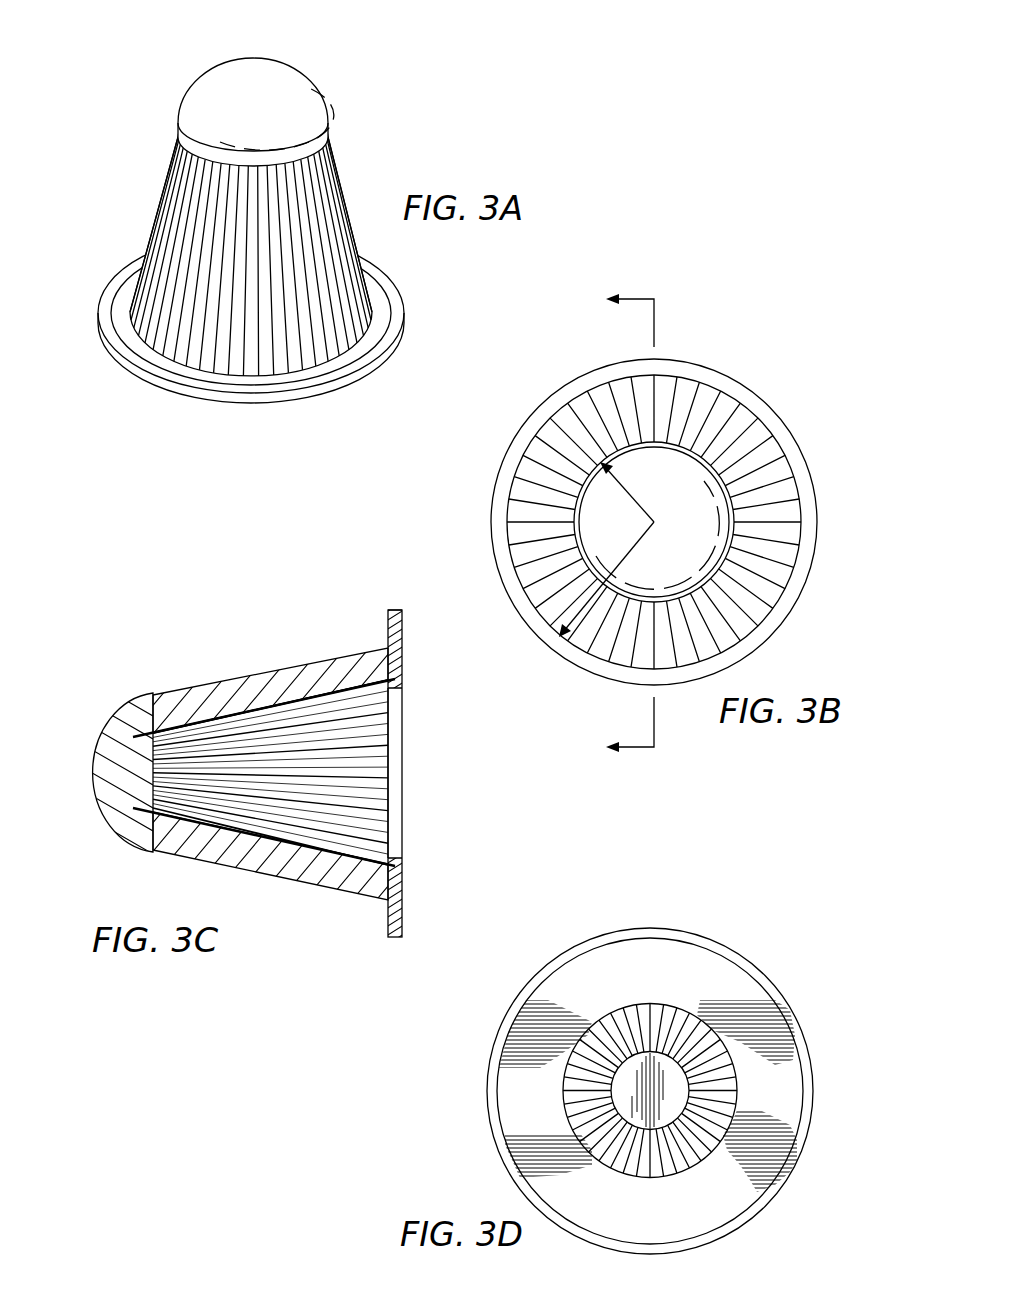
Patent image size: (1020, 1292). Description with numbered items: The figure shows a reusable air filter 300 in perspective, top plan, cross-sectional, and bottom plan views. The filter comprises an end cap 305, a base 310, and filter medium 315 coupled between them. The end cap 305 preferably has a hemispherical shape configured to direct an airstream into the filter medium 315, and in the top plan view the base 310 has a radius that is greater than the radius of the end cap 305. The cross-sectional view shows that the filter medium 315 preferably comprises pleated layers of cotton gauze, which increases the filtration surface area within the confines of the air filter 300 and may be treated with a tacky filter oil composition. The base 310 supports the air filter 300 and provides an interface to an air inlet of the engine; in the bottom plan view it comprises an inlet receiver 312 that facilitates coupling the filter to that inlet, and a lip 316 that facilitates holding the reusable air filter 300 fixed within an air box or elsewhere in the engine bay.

In FIG. 3A, the reusable air filter 300 is at (174, 58).
In FIG. 3B, the reusable air filter 300 is at (551, 365).
In FIG. 3C, the reusable air filter 300 is at (183, 642).
In FIG. 3D, the reusable air filter 300 is at (611, 912).
In FIG. 3A, the end cap 305 is at (278, 96).
In FIG. 3B, the end cap 305 is at (696, 498).
In FIG. 3C, the end cap 305 is at (103, 748).
In FIG. 3A, the base 310 is at (370, 298).
In FIG. 3B, the base 310 is at (492, 511).
In FIG. 3C, the base 310 is at (397, 900).
In FIG. 3D, the base 310 is at (683, 960).
In FIG. 3C, the inlet receiver 312 is at (396, 780).
In FIG. 3D, the inlet receiver 312 is at (565, 1112).
In FIG. 3A, the filter medium 315 is at (326, 194).
In FIG. 3C, the filter medium 315 is at (273, 722).
In FIG. 3D, the filter medium 315 is at (717, 1068).
In FIG. 3A, the lip 316 is at (110, 325).
In FIG. 3C, the lip 316 is at (402, 619).
In FIG. 3D, the lip 316 is at (737, 1217).